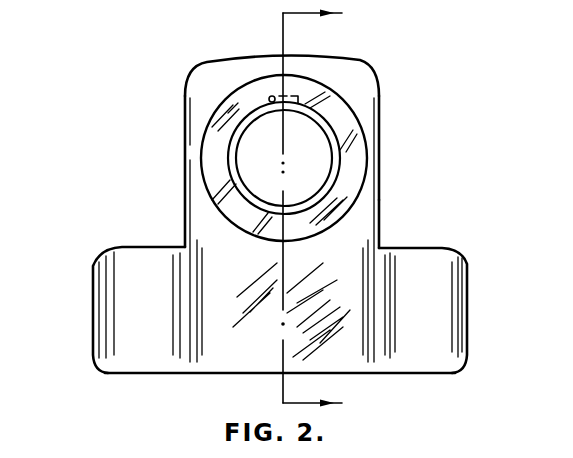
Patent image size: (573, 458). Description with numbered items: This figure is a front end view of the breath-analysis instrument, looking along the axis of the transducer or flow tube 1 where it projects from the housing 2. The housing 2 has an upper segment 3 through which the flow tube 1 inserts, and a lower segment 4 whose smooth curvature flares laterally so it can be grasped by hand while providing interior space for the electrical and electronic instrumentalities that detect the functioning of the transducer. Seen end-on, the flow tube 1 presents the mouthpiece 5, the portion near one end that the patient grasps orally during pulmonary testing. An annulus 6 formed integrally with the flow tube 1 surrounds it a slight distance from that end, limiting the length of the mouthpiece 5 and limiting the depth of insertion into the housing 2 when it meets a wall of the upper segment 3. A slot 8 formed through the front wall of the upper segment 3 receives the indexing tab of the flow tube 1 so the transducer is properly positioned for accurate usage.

The transducer or flow tube 1 is at (374, 128).
The housing 2 is at (381, 247).
The upper segment 3 is at (208, 75).
The lower segment 4 is at (128, 327).
The mouthpiece 5 is at (230, 179).
The annulus 6 is at (218, 135).
The slot 8 is at (270, 100).